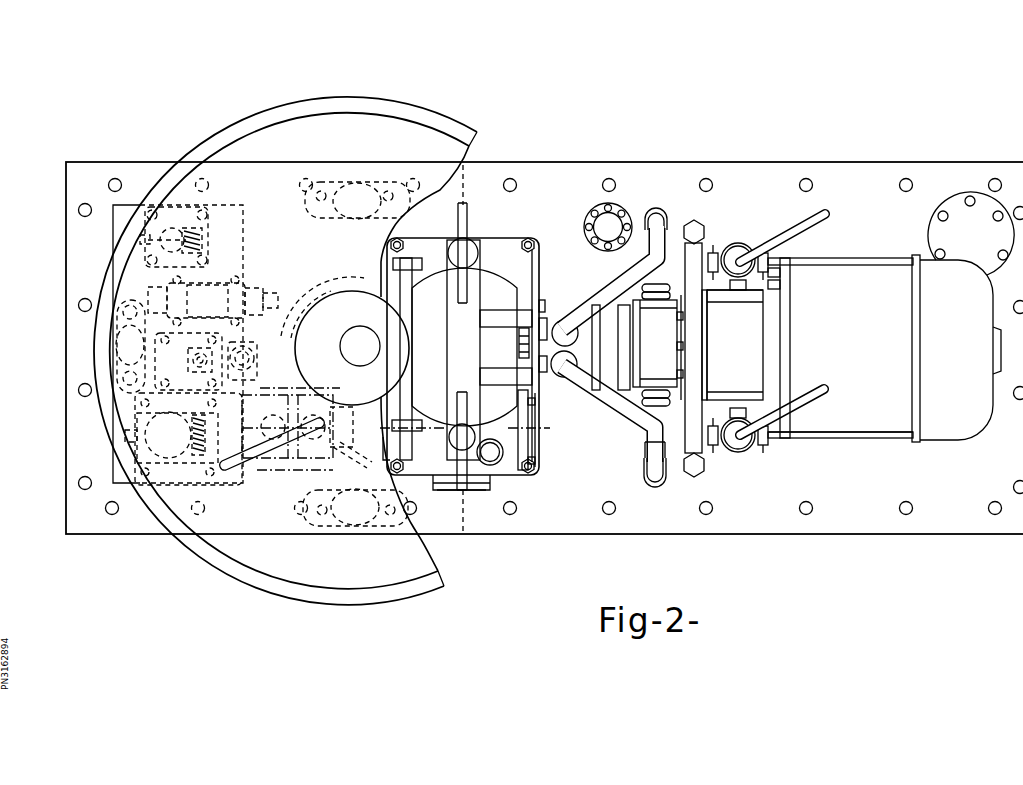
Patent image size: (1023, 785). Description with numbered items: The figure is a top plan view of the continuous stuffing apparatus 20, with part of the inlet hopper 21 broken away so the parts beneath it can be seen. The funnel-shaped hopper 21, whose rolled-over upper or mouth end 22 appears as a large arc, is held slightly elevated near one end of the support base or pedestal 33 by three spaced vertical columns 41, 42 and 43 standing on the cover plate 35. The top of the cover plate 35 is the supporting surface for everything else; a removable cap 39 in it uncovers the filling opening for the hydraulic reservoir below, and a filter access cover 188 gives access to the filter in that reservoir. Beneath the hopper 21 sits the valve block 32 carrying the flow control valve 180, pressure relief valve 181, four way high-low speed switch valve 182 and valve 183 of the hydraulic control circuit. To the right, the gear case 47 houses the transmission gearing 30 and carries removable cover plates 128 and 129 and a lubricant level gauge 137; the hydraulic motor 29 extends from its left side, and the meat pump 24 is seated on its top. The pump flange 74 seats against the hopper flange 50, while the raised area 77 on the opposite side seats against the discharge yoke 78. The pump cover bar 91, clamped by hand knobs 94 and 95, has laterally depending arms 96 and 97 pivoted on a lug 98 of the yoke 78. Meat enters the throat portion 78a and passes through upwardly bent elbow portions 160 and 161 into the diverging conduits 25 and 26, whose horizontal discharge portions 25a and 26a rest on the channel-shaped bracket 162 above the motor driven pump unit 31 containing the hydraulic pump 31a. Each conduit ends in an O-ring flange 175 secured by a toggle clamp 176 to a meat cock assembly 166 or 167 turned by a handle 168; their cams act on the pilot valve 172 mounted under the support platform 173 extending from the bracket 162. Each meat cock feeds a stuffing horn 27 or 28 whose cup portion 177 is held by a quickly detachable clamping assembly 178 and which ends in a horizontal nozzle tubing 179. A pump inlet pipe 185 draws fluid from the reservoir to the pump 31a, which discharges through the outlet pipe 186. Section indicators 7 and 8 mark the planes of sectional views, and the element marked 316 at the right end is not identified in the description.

The continuous stuffing apparatus 20 is at (150, 115).
The inlet hopper or receiving chamber 21 is at (285, 338).
The upper or mouth end 22 is at (262, 123).
The meat pump 24 is at (492, 367).
The conduit 25 is at (614, 268).
The horizontally extending discharge portion 25a is at (686, 240).
The conduit 26 is at (637, 434).
The horizontally extending discharge portion 26a is at (670, 478).
The discharge nozzle or stuffing horn 27 is at (815, 262).
The discharge nozzle or stuffing horn 28 is at (855, 432).
The hydraulic motor 29 is at (292, 394).
The transmission gearing 30 is at (497, 486).
The motor driven pump unit 31 is at (871, 443).
The constant delivery vane type hydraulic pump 31a is at (645, 338).
The valve block 32 is at (120, 205).
The support base or pedestal 33 is at (544, 335).
The cover plate 35 is at (770, 178).
The removable cap 39 is at (605, 222).
The vertical column 41 is at (112, 346).
The vertical column 42 is at (350, 517).
The vertical column 43 is at (352, 196).
The gear case or housing 47 is at (425, 475).
The flange 50 is at (398, 292).
The flange portion 74 is at (412, 262).
The raised area 77 is at (545, 316).
The discharge yoke 78 is at (547, 327).
The throat portion 78a is at (548, 373).
The bar 91 is at (455, 335).
The hand knob 94 is at (456, 403).
The hand knob 95 is at (467, 230).
The laterally depending arm 96 is at (492, 378).
The laterally depending arm 97 is at (513, 310).
The lug 98 is at (519, 345).
The removable cover plate 128 is at (441, 492).
The removable cover plate 129 is at (537, 455).
The gauge 137 is at (493, 461).
The upwardly bent elbow portion 160 is at (558, 298).
The upwardly bent elbow portion 161 is at (571, 391).
The channel-shaped bracket 162 is at (715, 339).
The meat cock assembly 166 is at (752, 245).
The meat cock assembly 167 is at (742, 454).
The hand operated handle 168 is at (818, 216).
The pilot valve 172 is at (782, 306).
The horizontal support platform 173 is at (775, 368).
The O-ring flange 175 is at (704, 244).
The toggle type clamping ring 176 is at (710, 293).
The cup portion 177 is at (763, 269).
The quickly detachable clamping assembly 178 is at (764, 287).
The tubing or nozzle 179 is at (866, 262).
The adjustable high speed flow control valve 180 is at (148, 435).
The pressure relief valve 181 is at (240, 344).
The four way high-low speed switch valve 182 is at (257, 290).
The valve 183 is at (200, 244).
The pump inlet pipe 185 is at (646, 251).
The pump outlet pipe 186 is at (646, 456).
The filter access cover 188 is at (965, 200).
The tank 316 is at (975, 360).
The section line 7 is at (263, 477).
The section line 8 is at (457, 182).